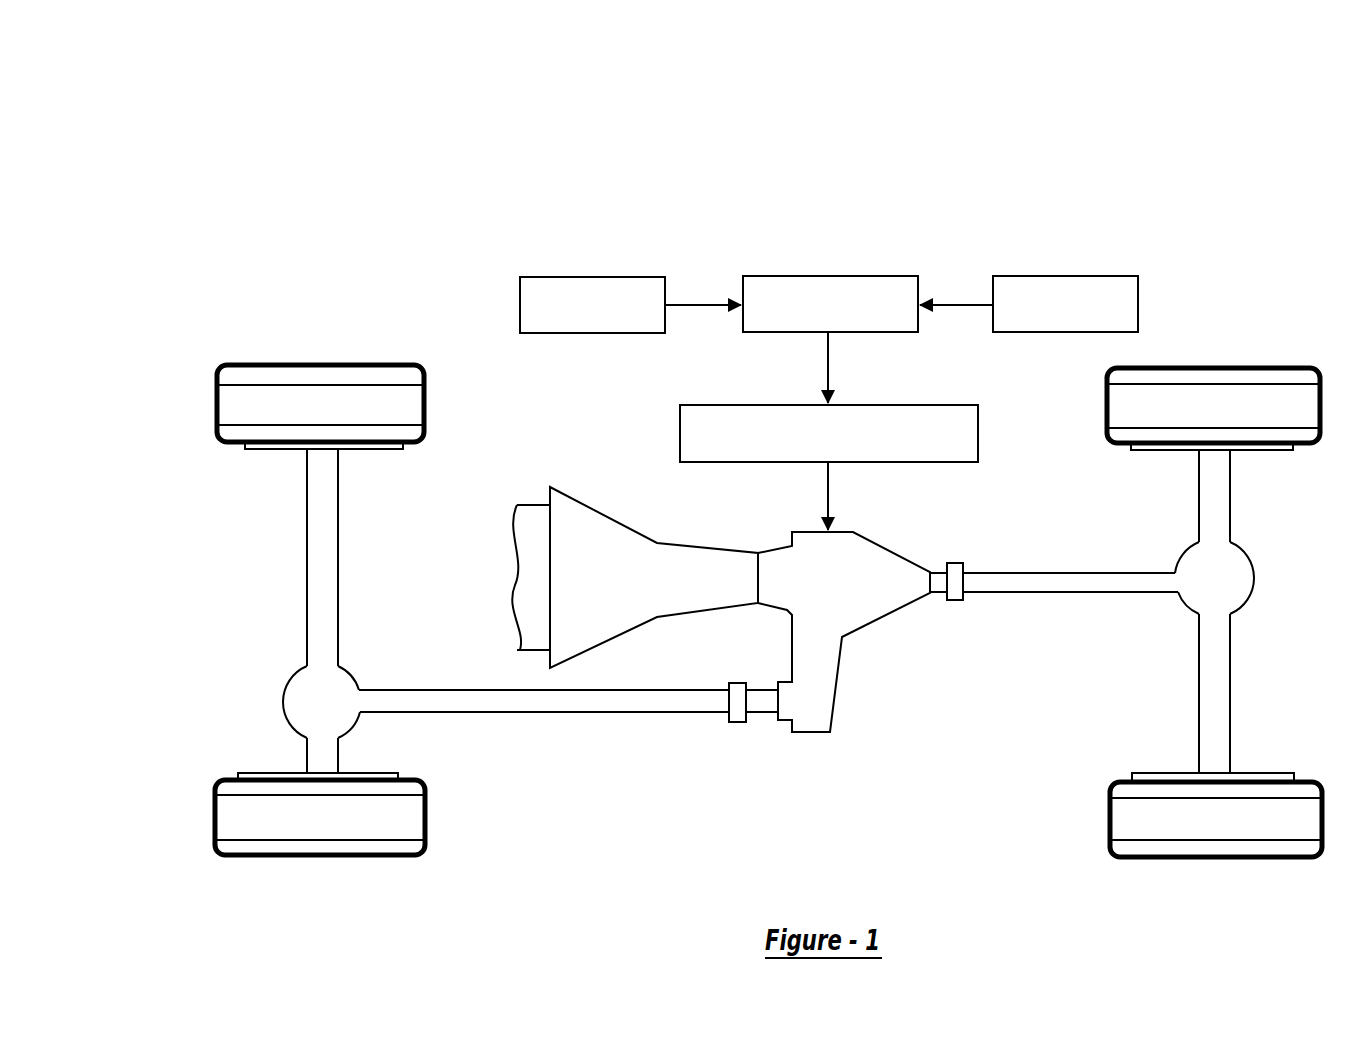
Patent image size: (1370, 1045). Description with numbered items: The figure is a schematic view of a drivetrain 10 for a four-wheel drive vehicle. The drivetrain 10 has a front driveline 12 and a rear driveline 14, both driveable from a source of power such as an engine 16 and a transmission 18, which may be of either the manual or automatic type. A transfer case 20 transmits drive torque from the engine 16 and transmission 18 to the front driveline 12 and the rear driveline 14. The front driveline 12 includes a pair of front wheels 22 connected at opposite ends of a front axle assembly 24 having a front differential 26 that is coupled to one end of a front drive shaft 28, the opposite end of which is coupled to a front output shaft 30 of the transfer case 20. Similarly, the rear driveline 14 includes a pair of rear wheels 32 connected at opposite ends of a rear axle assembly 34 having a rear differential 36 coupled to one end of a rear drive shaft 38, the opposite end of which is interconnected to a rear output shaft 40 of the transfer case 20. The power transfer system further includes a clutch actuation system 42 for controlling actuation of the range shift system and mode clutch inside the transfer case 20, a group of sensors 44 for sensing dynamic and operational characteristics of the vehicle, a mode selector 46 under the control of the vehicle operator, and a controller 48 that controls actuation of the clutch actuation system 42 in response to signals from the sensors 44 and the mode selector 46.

The drivetrain 10 is at (1044, 128).
The front driveline 12 is at (362, 604).
The rear driveline 14 is at (1131, 549).
The engine 16 is at (535, 551).
The transmission 18 is at (673, 587).
The transfer case 20 is at (845, 672).
The front wheels 22 is at (288, 400).
The front axle assembly 24 is at (318, 507).
The front differential 26 is at (300, 700).
The front drive shaft 28 is at (646, 700).
The front output shaft 30 is at (765, 700).
The rear wheels 32 is at (1233, 410).
The rear axle assembly 34 is at (1222, 491).
The rear differential 36 is at (1228, 580).
The rear drive shaft 38 is at (1137, 585).
The rear output shaft 40 is at (937, 573).
The clutch actuation system 42 is at (952, 442).
The sensors 44 is at (1083, 292).
The mode selector 46 is at (637, 290).
The controller 48 is at (857, 300).